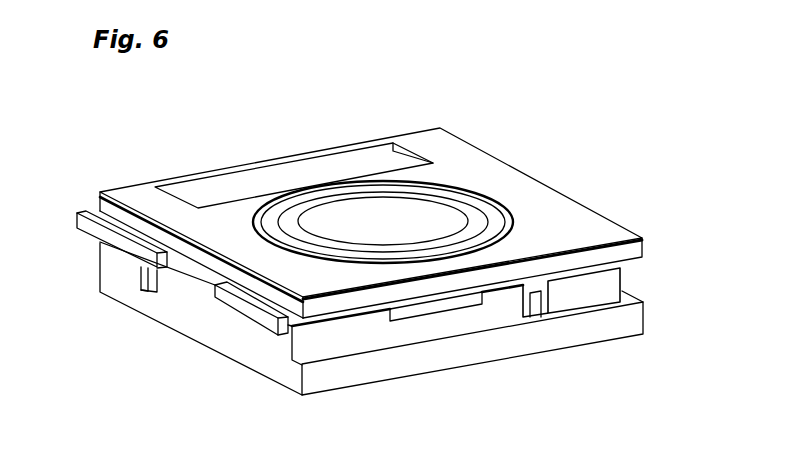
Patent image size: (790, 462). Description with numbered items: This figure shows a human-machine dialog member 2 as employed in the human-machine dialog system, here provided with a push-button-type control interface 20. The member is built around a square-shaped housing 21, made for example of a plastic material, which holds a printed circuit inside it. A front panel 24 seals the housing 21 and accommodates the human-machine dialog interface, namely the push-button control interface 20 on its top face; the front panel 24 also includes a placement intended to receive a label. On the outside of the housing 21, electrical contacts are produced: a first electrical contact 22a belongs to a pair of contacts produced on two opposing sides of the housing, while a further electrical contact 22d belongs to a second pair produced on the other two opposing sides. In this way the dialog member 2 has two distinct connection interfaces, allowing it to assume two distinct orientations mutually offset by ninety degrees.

The human-machine dialog member 2 is at (131, 141).
The control interface 20 is at (362, 207).
The housing 21 is at (203, 333).
The electrical contact 22a is at (143, 281).
The electrical contact 22d is at (532, 320).
The front panel 24 is at (462, 162).